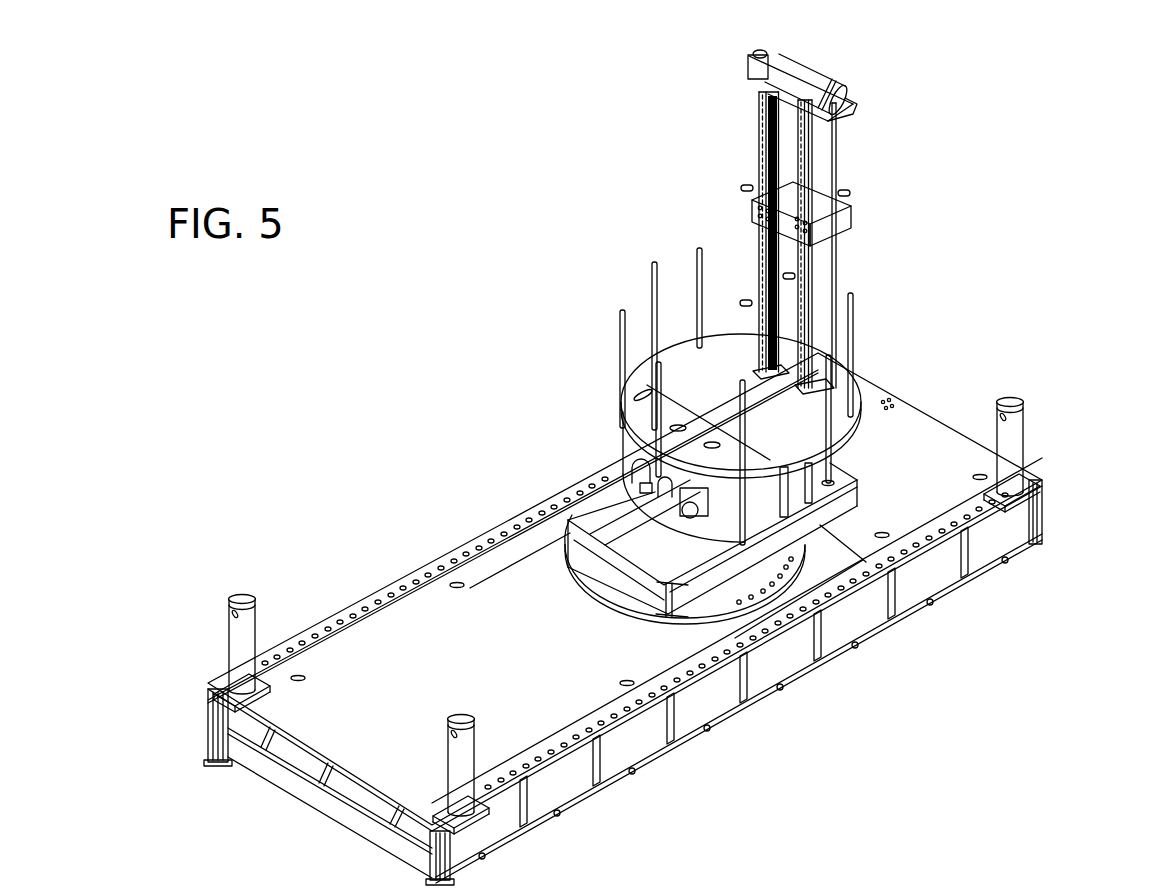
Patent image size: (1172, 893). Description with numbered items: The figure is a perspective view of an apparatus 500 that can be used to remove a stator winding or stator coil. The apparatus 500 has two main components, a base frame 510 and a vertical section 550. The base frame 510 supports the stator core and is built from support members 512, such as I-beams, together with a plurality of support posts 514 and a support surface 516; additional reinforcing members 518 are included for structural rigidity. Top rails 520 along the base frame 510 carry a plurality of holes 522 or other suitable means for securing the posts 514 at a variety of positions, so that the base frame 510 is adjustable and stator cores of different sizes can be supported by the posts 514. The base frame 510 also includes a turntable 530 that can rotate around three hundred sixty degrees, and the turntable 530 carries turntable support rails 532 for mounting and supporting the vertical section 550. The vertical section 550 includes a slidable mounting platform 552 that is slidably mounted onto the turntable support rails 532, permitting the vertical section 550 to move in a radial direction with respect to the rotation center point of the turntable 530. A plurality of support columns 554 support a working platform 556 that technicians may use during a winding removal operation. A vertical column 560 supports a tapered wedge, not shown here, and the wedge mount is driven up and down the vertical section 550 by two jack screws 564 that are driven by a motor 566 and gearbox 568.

The apparatus 500 is at (466, 292).
The base frame 510 is at (454, 511).
The support members 512 is at (237, 717).
The support posts 514 is at (238, 636).
The support surface 516 is at (570, 641).
The reinforcing members 518 is at (397, 808).
The top rails 520 is at (578, 480).
The holes 522 is at (331, 628).
The turntable 530 is at (592, 577).
The turntable support rails 532 is at (754, 214).
The vertical section 550 is at (918, 204).
The slidable mounting platform 552 is at (568, 538).
The support columns 554 is at (843, 462).
The working platform 556 is at (730, 392).
The vertical column 560 is at (823, 265).
The jack screws 564 is at (836, 136).
The motor 566 is at (792, 76).
The gearbox 568 is at (836, 98).